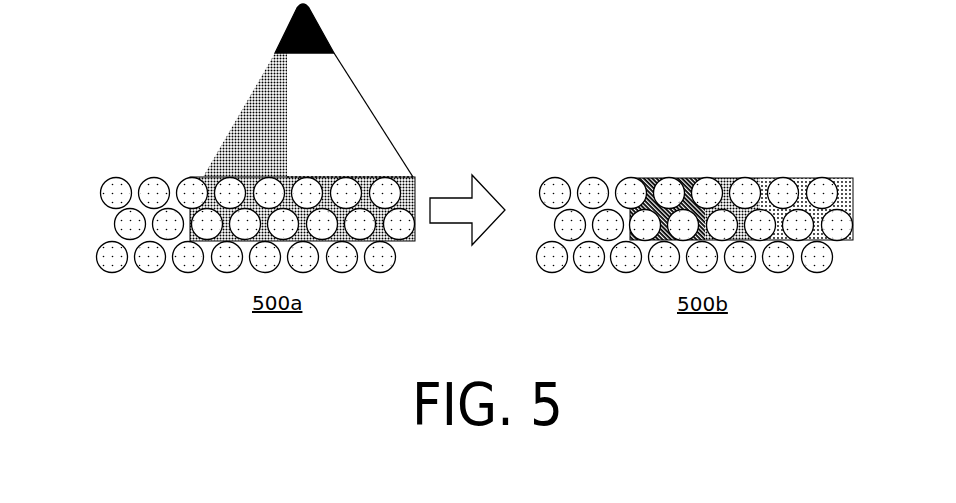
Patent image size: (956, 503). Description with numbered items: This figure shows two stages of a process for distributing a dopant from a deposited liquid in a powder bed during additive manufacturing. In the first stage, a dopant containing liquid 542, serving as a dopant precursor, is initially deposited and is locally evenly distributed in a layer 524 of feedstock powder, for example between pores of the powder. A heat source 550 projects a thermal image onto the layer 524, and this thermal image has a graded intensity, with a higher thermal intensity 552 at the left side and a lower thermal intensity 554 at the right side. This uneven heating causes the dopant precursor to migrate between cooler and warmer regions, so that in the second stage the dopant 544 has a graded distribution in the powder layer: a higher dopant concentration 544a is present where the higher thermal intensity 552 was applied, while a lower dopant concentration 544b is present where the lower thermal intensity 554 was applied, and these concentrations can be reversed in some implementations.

The layer of feedstock powder 524 is at (108, 230).
The dopant containing liquid 542 is at (418, 178).
The dopant 544 is at (752, 159).
The higher dopant concentration 544a is at (645, 178).
The lower dopant concentration 544b is at (840, 178).
The heat source 550 is at (290, 90).
The higher thermal intensity 552 is at (205, 151).
The lower thermal intensity 554 is at (385, 160).